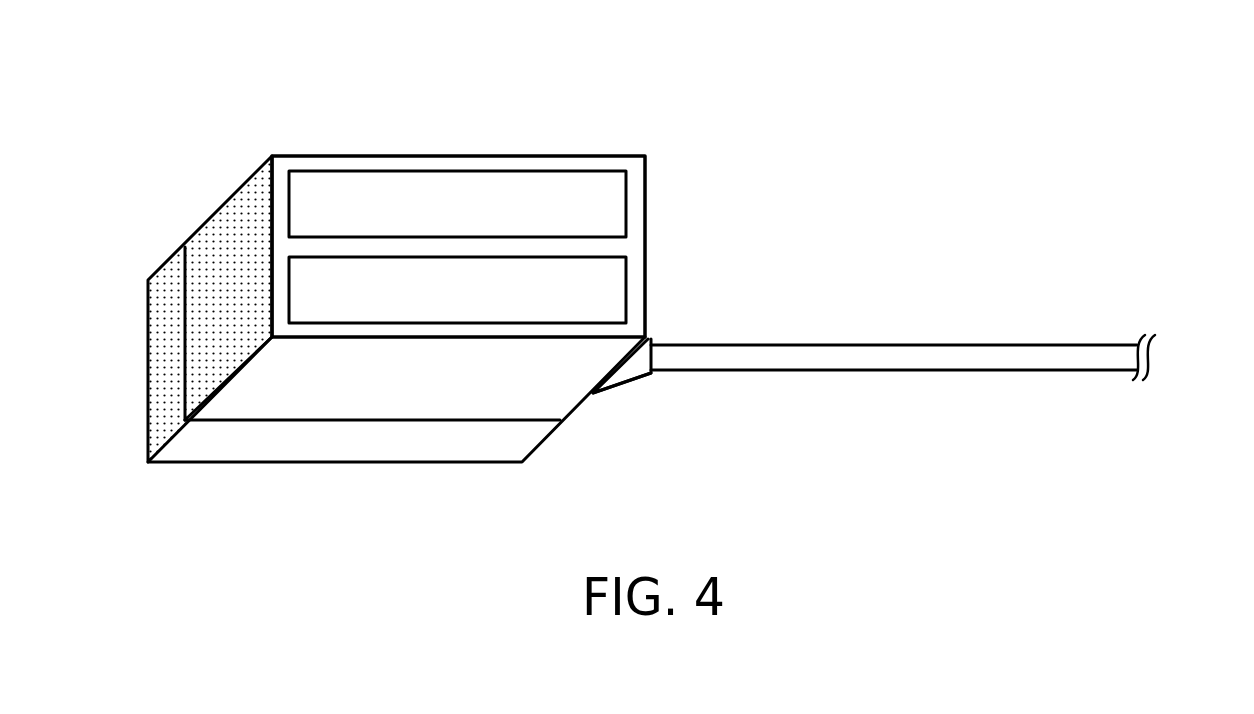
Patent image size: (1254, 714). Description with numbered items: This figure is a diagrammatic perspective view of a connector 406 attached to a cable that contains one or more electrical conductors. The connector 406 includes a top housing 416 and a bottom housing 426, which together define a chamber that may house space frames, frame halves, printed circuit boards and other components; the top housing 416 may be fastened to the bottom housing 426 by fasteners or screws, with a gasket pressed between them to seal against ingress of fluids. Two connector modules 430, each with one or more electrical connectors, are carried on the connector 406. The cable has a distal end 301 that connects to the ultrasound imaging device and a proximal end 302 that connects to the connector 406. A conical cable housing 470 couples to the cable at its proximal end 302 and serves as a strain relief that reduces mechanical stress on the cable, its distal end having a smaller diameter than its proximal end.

The connector 406 is at (178, 158).
The top housing 416 is at (162, 335).
The bottom housing 426 is at (463, 403).
The connector modules 430 is at (528, 183).
The proximal end 302 is at (652, 340).
The conical cable housing 470 is at (630, 385).
The distal end 301 is at (1150, 360).